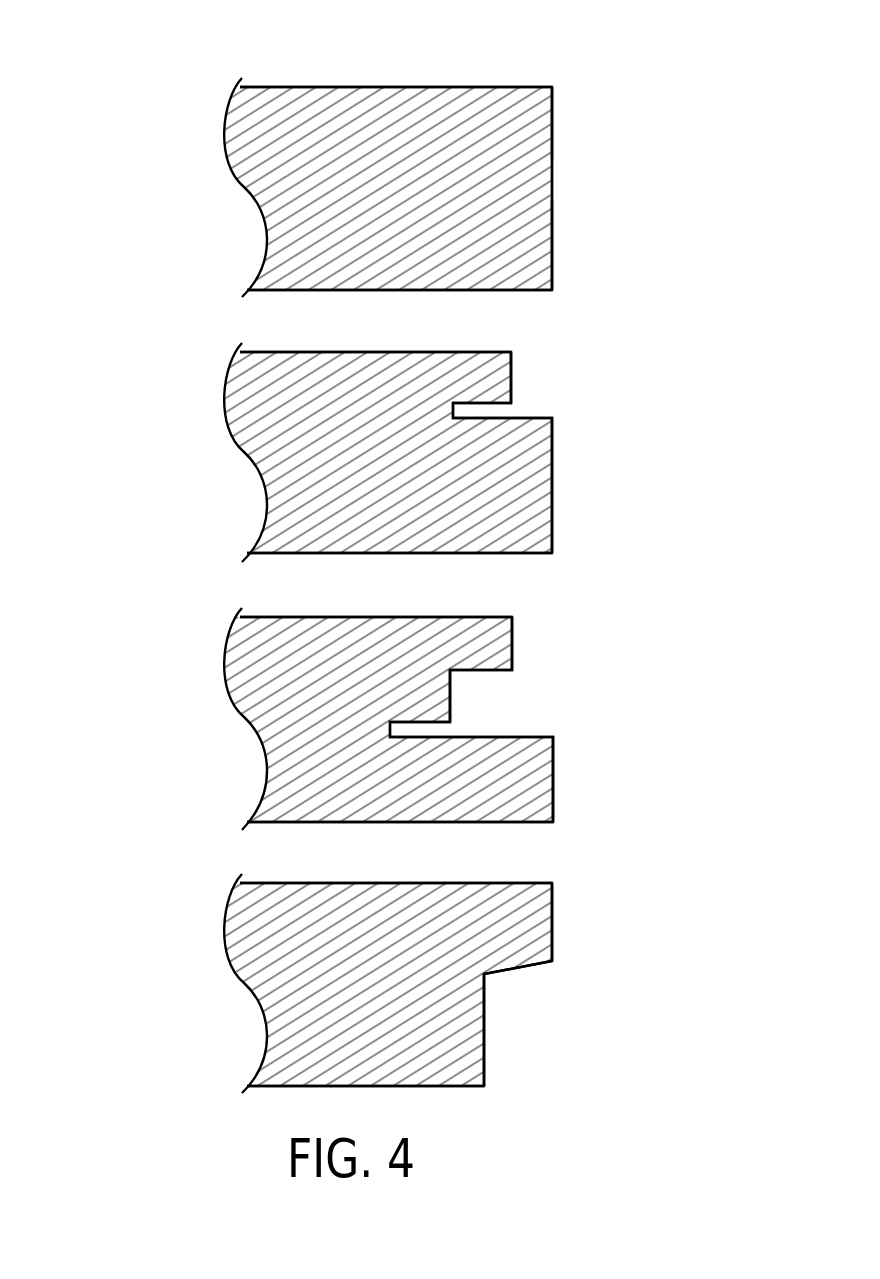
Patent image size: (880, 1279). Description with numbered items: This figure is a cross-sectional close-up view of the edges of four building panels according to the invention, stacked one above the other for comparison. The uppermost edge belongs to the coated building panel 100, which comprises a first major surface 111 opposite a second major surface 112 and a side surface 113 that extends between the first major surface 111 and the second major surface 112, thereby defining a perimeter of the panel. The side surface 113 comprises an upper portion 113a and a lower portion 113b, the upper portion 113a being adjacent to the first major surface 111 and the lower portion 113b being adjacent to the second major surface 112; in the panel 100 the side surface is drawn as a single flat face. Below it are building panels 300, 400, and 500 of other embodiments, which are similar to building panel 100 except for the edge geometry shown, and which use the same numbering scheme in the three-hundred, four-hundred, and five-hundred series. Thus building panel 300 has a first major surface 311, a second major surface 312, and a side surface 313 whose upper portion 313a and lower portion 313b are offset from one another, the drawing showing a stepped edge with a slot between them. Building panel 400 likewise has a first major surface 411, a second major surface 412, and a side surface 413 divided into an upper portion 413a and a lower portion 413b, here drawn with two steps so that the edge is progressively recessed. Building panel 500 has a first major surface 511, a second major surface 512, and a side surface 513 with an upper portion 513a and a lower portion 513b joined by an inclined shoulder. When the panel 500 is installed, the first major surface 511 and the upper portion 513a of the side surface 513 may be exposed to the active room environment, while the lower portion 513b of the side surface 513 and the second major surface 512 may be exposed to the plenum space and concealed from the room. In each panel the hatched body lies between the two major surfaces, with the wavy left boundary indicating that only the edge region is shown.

The coated building panel 100 is at (188, 128).
The first major surface 111 is at (527, 290).
The second major surface 112 is at (467, 87).
The side surface 113 is at (552, 171).
The upper portion of the side surface 113a is at (552, 260).
The lower portion of the side surface 113b is at (552, 112).
The building panel 300 is at (198, 489).
The first major surface 311 is at (535, 553).
The second major surface 312 is at (497, 352).
The side surface 313 is at (502, 452).
The upper portion of the side surface 313a is at (552, 495).
The lower portion of the side surface 313b is at (511, 380).
The building panel 400 is at (191, 764).
The first major surface 411 is at (298, 822).
The second major surface 412 is at (307, 617).
The side surface 413 is at (471, 719).
The upper portion of the side surface 413a is at (553, 799).
The lower portion of the side surface 413b is at (512, 637).
The building panel 500 is at (221, 1001).
The first major surface 511 is at (450, 1086).
The second major surface 512 is at (538, 883).
The side surface 513 is at (518, 984).
The upper portion of the side surface 513a is at (484, 1057).
The lower portion of the side surface 513b is at (552, 918).